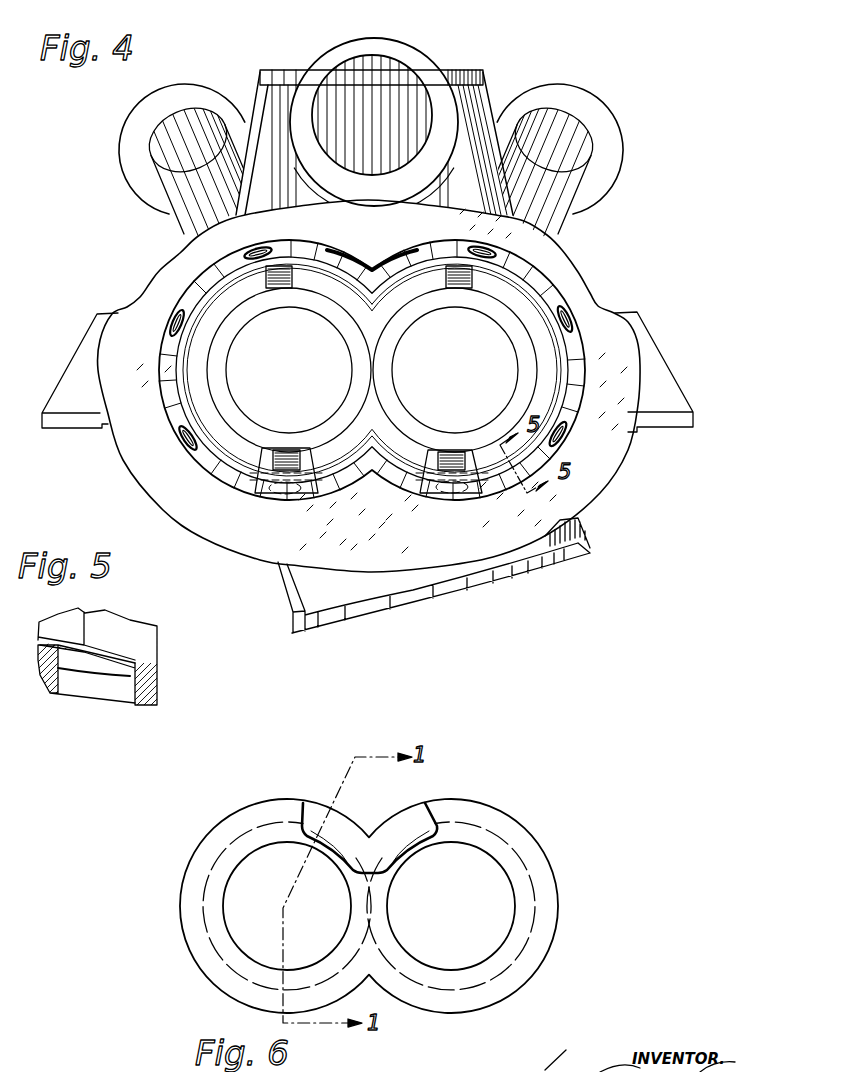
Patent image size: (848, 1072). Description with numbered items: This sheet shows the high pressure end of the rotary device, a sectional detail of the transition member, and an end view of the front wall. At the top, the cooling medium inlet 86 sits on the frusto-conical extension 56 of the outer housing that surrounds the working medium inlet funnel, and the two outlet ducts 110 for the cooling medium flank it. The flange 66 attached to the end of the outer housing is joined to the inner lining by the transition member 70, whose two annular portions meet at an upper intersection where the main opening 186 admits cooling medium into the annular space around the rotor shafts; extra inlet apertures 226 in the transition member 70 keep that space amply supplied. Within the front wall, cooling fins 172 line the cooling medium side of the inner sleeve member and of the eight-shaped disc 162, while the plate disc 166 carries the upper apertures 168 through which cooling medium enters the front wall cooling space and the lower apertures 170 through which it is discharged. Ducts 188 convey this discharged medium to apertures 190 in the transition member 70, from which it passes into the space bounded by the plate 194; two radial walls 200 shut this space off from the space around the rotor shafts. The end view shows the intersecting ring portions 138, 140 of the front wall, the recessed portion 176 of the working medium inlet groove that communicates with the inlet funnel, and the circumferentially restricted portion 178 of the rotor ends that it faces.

In FIG. 4, the enclosing extension of the outer housing 56 is at (473, 113).
In FIG. 4, the flange 66 is at (590, 308).
In FIG. 4, the transition member 70 is at (537, 285).
In FIG. 5, the transition member 70 is at (118, 655).
In FIG. 4, the cooling medium inlet 86 is at (343, 83).
In FIG. 4, the outlet ducts for the cooling medium 110 is at (158, 153).
In FIG. 6, the ring portion 138 is at (557, 900).
In FIG. 6, the ring portion 140 is at (184, 933).
In FIG. 6, the disc 162 is at (535, 942).
In FIG. 4, the plate disc 166 is at (530, 308).
In FIG. 4, the apertures 168 is at (278, 287).
In FIG. 4, the apertures 170 is at (262, 475).
In FIG. 4, the cooling fins 172 is at (278, 289).
In FIG. 6, the recessed portion 176 is at (340, 832).
In FIG. 6, the circumferentially restricted portion 178 is at (308, 818).
In FIG. 4, the opening 186 is at (357, 267).
In FIG. 4, the ducts 188 is at (268, 483).
In FIG. 4, the apertures 190 is at (273, 492).
In FIG. 5, the plate 194 is at (118, 677).
In FIG. 4, the radial walls 200 is at (258, 466).
In FIG. 5, the radial walls 200 is at (77, 658).
In FIG. 4, the extra inlet apertures 226 is at (177, 318).